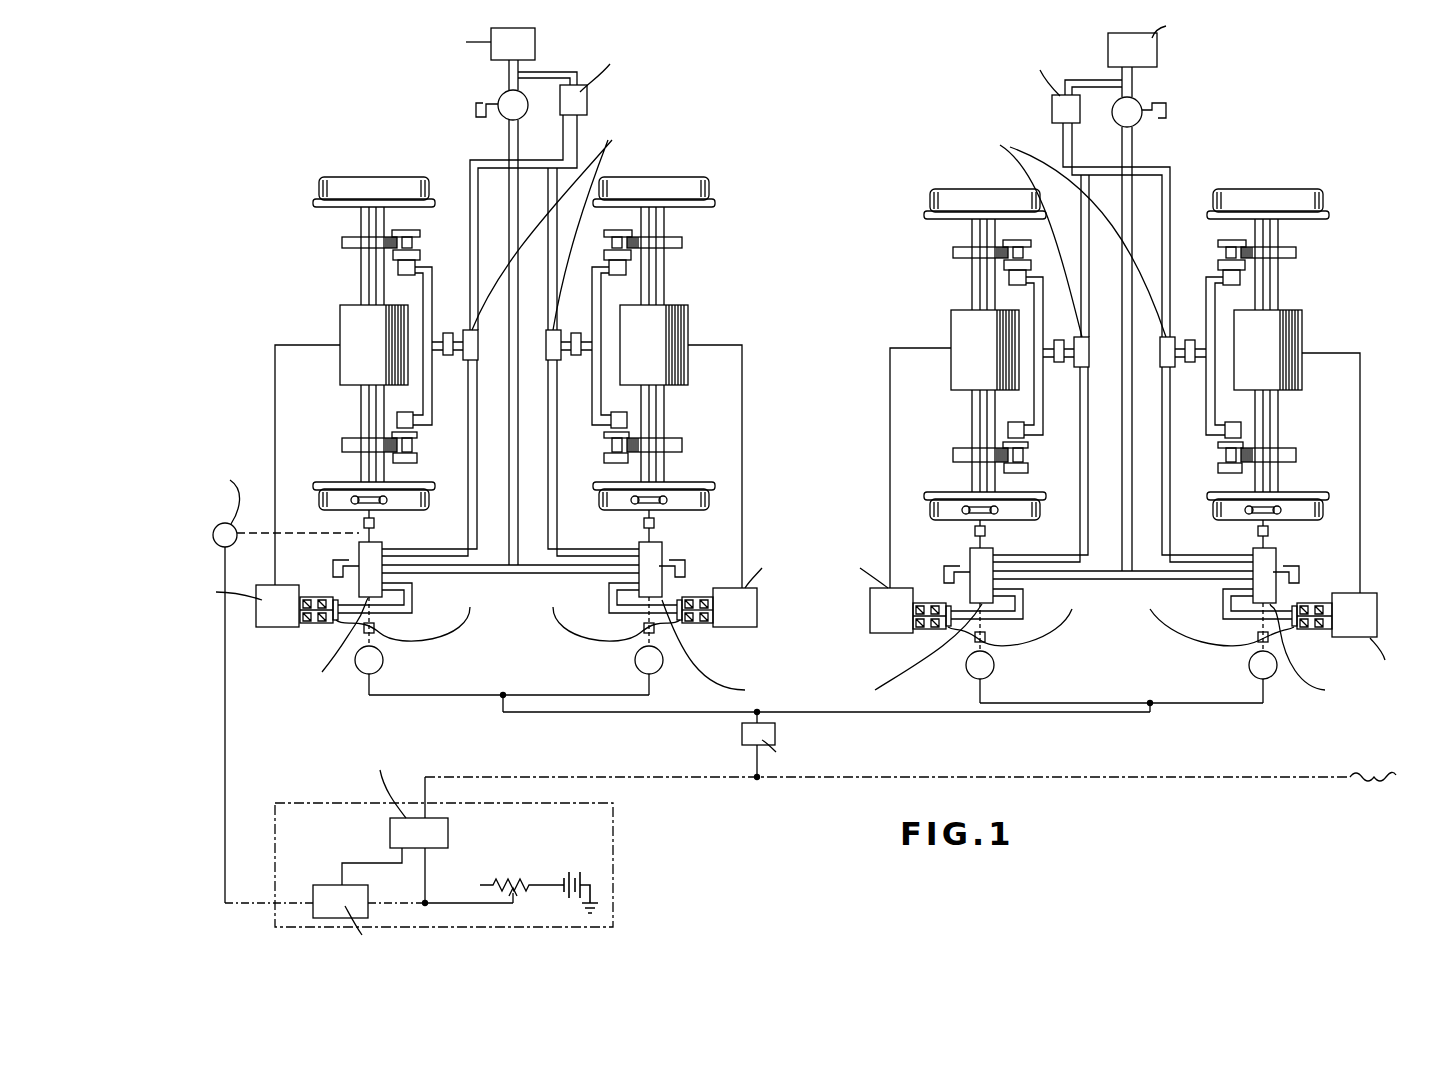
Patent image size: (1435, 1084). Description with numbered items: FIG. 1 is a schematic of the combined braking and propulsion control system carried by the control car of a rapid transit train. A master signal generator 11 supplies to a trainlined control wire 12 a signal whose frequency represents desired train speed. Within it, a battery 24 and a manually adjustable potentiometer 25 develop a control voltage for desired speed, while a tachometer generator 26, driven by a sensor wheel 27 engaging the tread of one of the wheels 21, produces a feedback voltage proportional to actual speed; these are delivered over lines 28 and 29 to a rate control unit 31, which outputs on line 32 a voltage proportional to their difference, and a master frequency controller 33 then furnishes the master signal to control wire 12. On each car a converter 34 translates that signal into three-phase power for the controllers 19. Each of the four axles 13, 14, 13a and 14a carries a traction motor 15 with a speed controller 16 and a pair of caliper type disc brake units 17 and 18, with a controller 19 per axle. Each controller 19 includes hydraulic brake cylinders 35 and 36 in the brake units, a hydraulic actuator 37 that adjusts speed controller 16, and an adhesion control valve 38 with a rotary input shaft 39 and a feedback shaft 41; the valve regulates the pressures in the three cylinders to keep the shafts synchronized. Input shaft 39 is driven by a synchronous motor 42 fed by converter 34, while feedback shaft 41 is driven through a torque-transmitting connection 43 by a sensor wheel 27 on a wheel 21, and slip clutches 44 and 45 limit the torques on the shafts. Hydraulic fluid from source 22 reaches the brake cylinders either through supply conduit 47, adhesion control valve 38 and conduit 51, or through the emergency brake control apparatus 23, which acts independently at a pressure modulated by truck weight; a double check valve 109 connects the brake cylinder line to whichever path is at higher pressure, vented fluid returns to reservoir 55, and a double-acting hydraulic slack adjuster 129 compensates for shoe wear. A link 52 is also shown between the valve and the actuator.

The master signal generator 11 is at (314, 780).
The trainlined control wire 12 is at (784, 780).
The axle 13 is at (360, 270).
The axle 13a is at (1278, 288).
The axle 14 is at (664, 270).
The axle 14a is at (972, 274).
The traction motor 15 is at (340, 320).
The speed controller 16 is at (290, 628).
The caliper type disc brake unit 17 is at (420, 232).
The caliper type disc brake unit 18 is at (417, 445).
The controller 19 is at (425, 590).
The wheel 21 is at (392, 177).
The source of hydraulic fluid under pressure 22 is at (535, 48).
The emergency brake control apparatus 23 is at (587, 102).
The battery 24 is at (568, 873).
The manually adjustable potentiometer 25 is at (513, 878).
The tachometer generator 26 is at (222, 523).
The sensor wheel 27 is at (338, 506).
The line 28 is at (474, 900).
The line 29 is at (225, 772).
The rate control unit 31 is at (324, 885).
The line 32 is at (366, 866).
The master frequency controller 33 is at (448, 830).
The converter 34 is at (775, 735).
The hydraulic brake cylinder 35 is at (818, 347).
The hydraulic brake cylinder 36 is at (410, 412).
The hydraulic actuator 37 is at (328, 624).
The adhesion control valve 38 is at (359, 549).
The rotary input shaft 39 is at (382, 618).
The feedback shaft 41 is at (374, 538).
The synchronous motor 42 is at (383, 660).
The torque-transmitting connection 43 is at (369, 511).
The slip clutch 44 is at (364, 630).
The slip clutch 45 is at (364, 523).
The supply conduit 47 is at (510, 550).
The conduit 51 is at (470, 530).
The link 52 is at (418, 602).
The reservoir 55 is at (469, 124).
The double check valve 109 is at (468, 330).
The double-acting hydraulic slack adjuster 129 is at (448, 355).